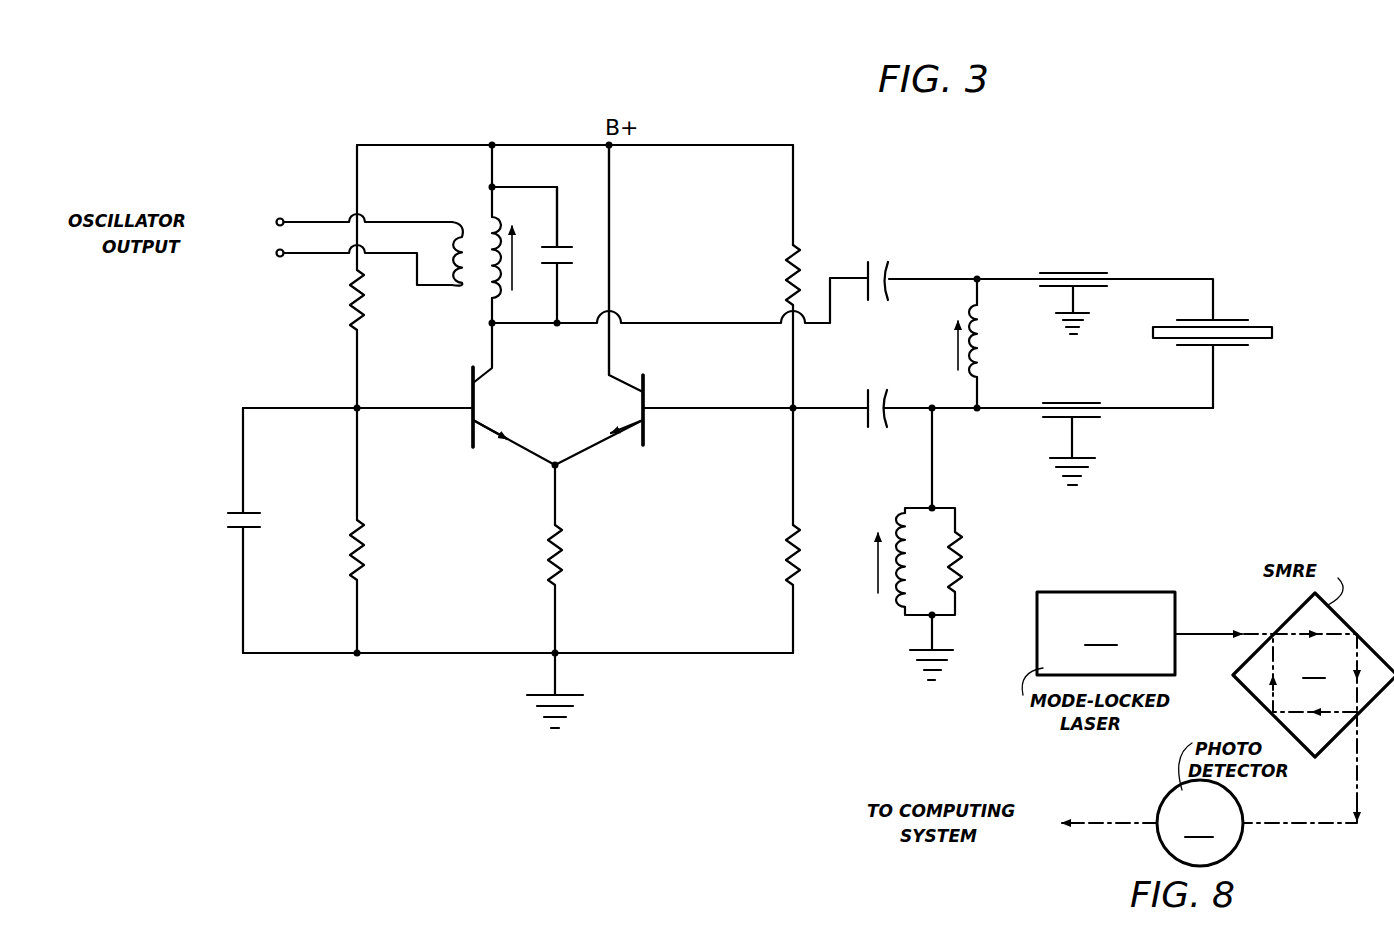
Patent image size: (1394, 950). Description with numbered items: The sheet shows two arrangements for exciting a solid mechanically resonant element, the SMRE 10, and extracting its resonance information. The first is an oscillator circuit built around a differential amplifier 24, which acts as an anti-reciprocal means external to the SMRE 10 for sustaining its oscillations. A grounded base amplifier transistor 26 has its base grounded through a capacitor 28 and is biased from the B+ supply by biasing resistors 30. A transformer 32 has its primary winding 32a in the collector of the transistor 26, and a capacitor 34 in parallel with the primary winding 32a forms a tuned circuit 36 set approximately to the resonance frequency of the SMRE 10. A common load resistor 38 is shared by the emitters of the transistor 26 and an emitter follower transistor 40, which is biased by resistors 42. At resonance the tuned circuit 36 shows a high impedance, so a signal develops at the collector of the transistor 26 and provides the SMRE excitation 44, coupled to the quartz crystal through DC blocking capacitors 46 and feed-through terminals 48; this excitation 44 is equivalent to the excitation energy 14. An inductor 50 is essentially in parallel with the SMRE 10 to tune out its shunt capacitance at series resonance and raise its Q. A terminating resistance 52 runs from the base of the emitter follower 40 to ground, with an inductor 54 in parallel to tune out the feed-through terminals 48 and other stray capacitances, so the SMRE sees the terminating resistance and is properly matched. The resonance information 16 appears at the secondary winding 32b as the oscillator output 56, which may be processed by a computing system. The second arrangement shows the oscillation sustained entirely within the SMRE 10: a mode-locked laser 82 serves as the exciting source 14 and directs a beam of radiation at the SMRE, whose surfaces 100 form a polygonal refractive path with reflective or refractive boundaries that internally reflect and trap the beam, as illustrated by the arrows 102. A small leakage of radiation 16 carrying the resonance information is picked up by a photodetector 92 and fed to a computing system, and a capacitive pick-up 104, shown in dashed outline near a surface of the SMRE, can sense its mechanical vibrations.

In FIG. 3, the SMRE 10 is at (1259, 306).
In FIG. 8, the SMRE 10 is at (1313, 675).
In FIG. 8, the excitation energy 14 is at (1213, 638).
In FIG. 8, the resonance information 16 is at (1357, 802).
In FIG. 3, the differential amplifier 24 is at (527, 622).
In FIG. 3, the grounded base amplifier transistor 26 is at (454, 433).
In FIG. 3, the capacitor 28 is at (227, 520).
In FIG. 3, the biasing resistors 30 is at (347, 302).
In FIG. 3, the transformer 32 is at (452, 224).
In FIG. 3, the primary winding 32a is at (483, 295).
In FIG. 3, the secondary winding 32b is at (427, 237).
In FIG. 3, the capacitor 34 is at (585, 243).
In FIG. 3, the tuned circuit 36 is at (535, 178).
In FIG. 3, the common load resistor 38 is at (557, 533).
In FIG. 3, the emitter follower transistor 40 is at (654, 430).
In FIG. 3, the biasing resistors 42 is at (797, 263).
In FIG. 3, the SMRE excitation 44 is at (716, 301).
In FIG. 3, the DC blocking capacitors 46 is at (878, 262).
In FIG. 3, the feed-through terminals 48 is at (1090, 262).
In FIG. 3, the inductor 50 is at (988, 337).
In FIG. 3, the terminating resistance 52 is at (960, 542).
In FIG. 3, the inductor 54 is at (895, 607).
In FIG. 3, the oscillator output 56 is at (267, 237).
In FIG. 8, the mode-locked laser 82 is at (1106, 633).
In FIG. 8, the photodetector 92 is at (1200, 823).
In FIG. 8, the surfaces 100 is at (1295, 613).
In FIG. 8, the arrows 102 is at (1357, 697).
In FIG. 8, the capacitive pick-up 104 is at (1376, 645).